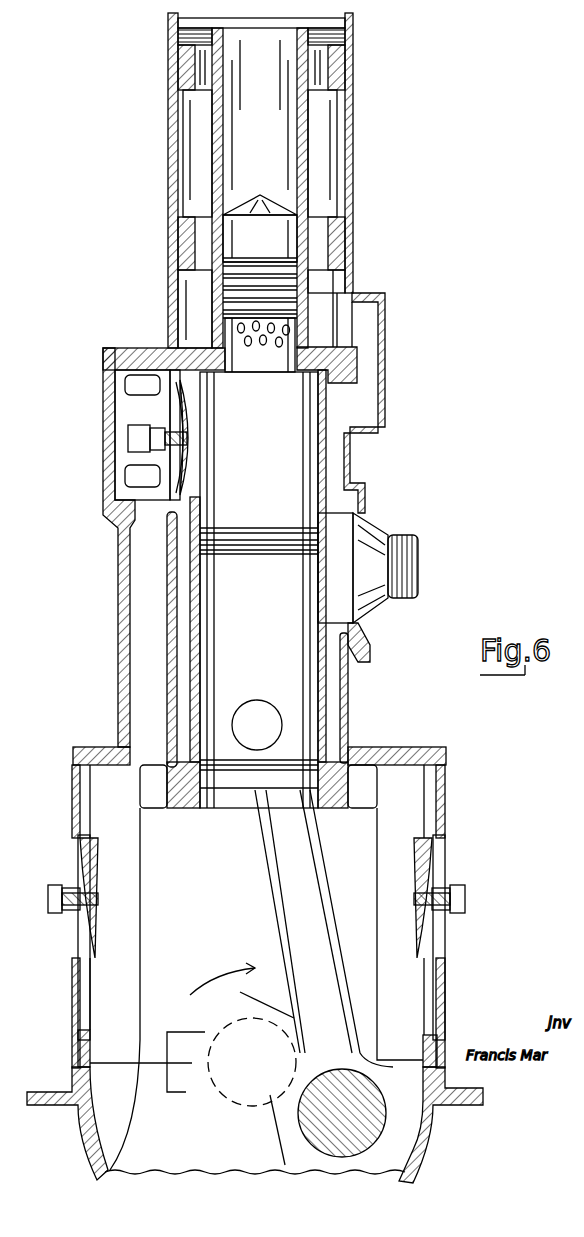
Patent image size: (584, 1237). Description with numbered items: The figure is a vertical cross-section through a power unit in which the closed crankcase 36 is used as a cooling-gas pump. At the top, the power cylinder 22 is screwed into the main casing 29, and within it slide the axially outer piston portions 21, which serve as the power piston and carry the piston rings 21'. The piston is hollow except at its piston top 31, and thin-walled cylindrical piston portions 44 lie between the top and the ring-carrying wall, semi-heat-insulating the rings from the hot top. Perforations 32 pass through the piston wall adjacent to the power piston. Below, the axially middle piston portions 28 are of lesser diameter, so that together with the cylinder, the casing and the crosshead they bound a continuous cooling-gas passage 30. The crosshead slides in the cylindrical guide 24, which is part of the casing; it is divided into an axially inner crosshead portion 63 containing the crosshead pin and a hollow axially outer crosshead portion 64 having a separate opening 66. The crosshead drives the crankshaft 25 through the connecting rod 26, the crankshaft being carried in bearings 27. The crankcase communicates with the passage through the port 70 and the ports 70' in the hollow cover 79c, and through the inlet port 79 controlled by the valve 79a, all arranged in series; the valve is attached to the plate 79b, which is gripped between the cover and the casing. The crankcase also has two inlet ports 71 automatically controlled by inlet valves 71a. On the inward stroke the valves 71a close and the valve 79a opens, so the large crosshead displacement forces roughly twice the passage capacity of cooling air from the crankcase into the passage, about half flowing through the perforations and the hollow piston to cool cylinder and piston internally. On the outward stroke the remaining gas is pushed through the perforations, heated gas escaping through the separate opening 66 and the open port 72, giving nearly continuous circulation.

The axially outer piston portions 21 is at (315, 290).
The piston rings 21' is at (316, 256).
The power cylinder 22 is at (305, 134).
The cylindrical guide 24 is at (200, 657).
The crankshaft 25 is at (238, 1088).
The connecting rod 26 is at (305, 911).
The bearings 27 is at (180, 1085).
The axially middle piston portions 28 is at (272, 407).
The main casing 29 is at (352, 160).
The cooling-gas passage 30 is at (302, 456).
The piston top 31 is at (266, 201).
The perforations 32 is at (260, 350).
The crankcase 36 is at (88, 1135).
The thin-walled cylindrical piston portions 44 is at (272, 232).
The axially inner crosshead portion 63 is at (288, 718).
The axially outer crosshead portion 64 is at (345, 652).
The separate opening 66 is at (335, 568).
The port 70 is at (110, 547).
The ports 70' is at (98, 464).
The inlet ports 71 is at (75, 857).
The inlet valves 71a is at (78, 942).
The open port 72 is at (378, 572).
The inlet port 79 is at (125, 410).
The valve 79a is at (165, 474).
The plate 79b is at (165, 500).
The hollow cover 79c is at (103, 438).